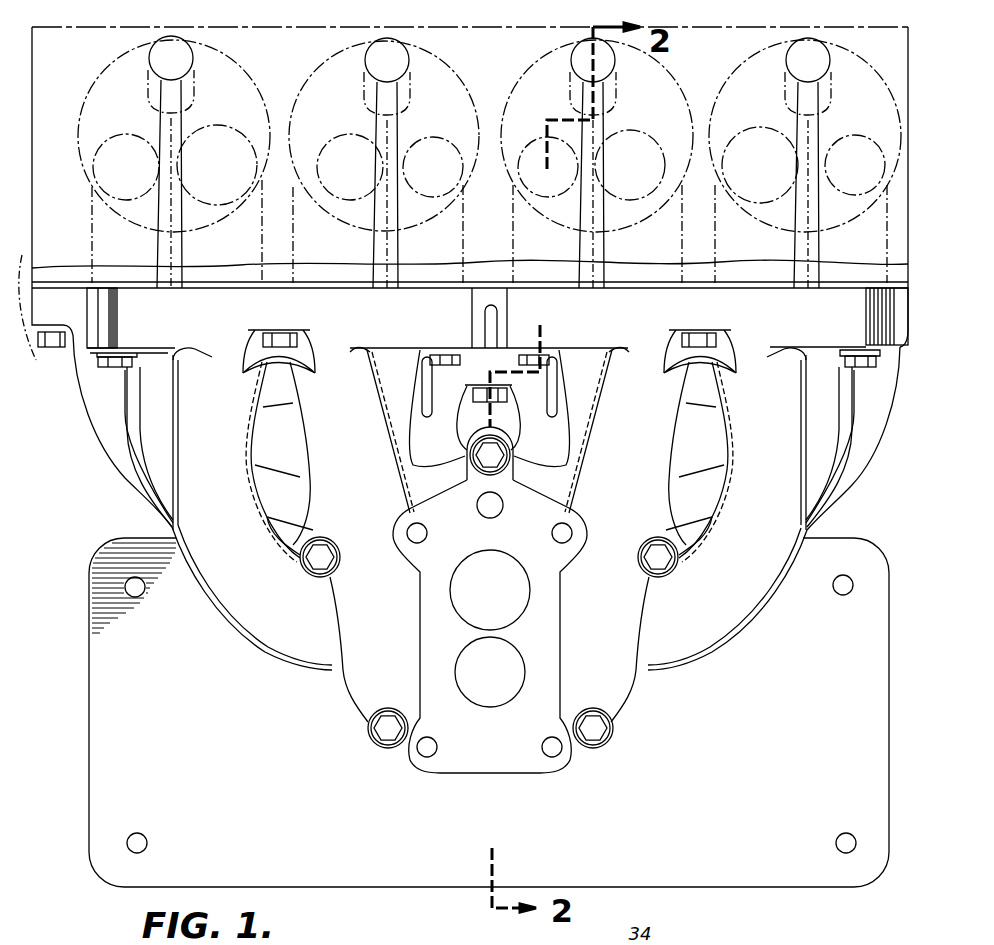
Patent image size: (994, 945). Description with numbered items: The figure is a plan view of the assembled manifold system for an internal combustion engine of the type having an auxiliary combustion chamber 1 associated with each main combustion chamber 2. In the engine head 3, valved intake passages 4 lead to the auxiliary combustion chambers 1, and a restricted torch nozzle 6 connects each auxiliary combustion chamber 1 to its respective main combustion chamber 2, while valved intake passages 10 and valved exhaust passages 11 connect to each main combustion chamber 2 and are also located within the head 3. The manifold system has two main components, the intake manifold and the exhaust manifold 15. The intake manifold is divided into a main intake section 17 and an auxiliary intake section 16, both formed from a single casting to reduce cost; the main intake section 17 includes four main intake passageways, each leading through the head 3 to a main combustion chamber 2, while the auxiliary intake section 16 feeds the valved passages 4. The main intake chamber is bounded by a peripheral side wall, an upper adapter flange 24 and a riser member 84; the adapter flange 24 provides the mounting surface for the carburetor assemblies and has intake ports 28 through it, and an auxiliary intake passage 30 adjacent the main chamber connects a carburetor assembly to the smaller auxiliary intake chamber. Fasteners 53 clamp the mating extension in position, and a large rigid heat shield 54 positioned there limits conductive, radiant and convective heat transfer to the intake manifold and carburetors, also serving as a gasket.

The auxiliary combustion chamber 1 is at (160, 55).
The main combustion chamber 2 is at (245, 118).
The engine head 3 is at (34, 317).
The valved intake passage 4 is at (168, 128).
The torch nozzle 6 is at (212, 92).
The valved intake passage 10 is at (240, 235).
The valved exhaust passage 11 is at (112, 229).
The exhaust manifold 15 is at (100, 415).
The auxiliary intake section 16 is at (160, 415).
The main intake section 17 is at (321, 436).
The upper adapter flange 24 is at (532, 752).
The intake port 28 is at (486, 698).
The auxiliary intake passage 30 is at (495, 510).
The fastener 53 is at (496, 456).
The heat shield 54 is at (102, 793).
The riser member 84 is at (478, 601).